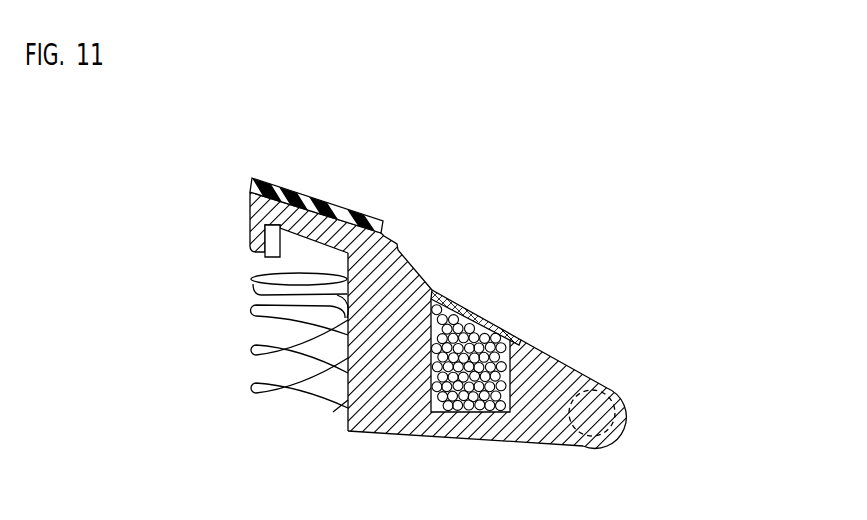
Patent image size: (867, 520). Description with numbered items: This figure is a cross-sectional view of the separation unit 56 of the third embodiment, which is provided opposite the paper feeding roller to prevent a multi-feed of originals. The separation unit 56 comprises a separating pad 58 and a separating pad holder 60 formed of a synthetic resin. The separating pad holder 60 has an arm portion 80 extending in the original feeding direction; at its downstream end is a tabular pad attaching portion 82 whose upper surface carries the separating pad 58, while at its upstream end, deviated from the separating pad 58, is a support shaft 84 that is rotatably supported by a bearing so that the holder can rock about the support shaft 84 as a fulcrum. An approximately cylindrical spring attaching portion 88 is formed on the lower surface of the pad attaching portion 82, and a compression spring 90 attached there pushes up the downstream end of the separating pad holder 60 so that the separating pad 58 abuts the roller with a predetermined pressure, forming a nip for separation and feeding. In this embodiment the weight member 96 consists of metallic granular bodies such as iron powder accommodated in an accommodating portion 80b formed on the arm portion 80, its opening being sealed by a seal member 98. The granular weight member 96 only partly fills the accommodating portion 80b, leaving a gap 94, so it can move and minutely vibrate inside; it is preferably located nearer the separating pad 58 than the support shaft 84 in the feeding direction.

The separation unit 56 is at (217, 128).
The separating pad 58 is at (345, 211).
The separating pad holder 60 is at (561, 340).
The arm portion 80 is at (349, 432).
The accommodating portion 80b is at (492, 432).
The pad attaching portion 82 is at (262, 205).
The support shaft 84 is at (610, 389).
The spring attaching portion 88 is at (273, 267).
The compression spring 90 is at (250, 352).
The gap 94 is at (463, 321).
The weight member 96 is at (464, 385).
The seal member 98 is at (452, 295).